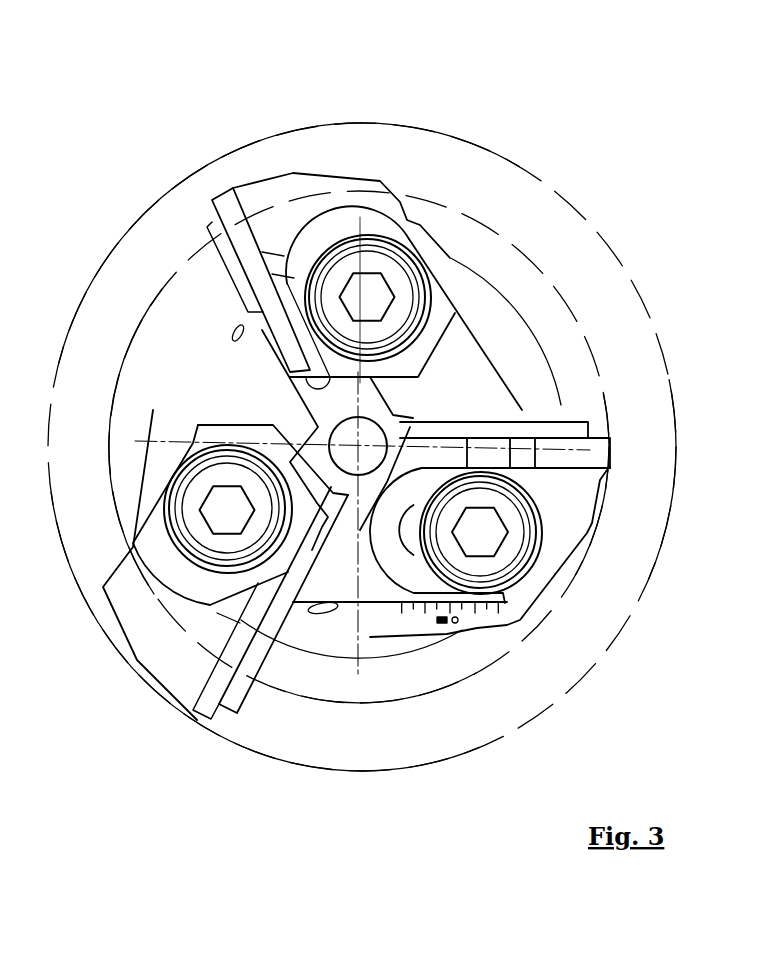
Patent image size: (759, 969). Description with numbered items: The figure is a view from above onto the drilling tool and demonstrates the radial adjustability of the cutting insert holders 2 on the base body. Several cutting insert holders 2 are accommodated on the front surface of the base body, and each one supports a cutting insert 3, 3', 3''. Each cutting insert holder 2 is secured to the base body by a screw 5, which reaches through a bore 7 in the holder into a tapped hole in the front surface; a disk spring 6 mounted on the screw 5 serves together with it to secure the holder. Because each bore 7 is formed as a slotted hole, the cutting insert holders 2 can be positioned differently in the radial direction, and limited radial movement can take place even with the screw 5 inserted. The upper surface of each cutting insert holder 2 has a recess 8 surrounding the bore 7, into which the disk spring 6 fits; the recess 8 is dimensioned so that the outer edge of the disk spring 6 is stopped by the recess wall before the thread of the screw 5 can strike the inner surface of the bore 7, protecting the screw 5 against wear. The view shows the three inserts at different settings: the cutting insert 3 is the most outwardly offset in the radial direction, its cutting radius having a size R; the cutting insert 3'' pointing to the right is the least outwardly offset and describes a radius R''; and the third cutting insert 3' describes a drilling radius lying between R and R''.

The cutting insert holder 2 is at (275, 185).
The cutting insert 3 is at (270, 656).
The cutting insert 3' is at (239, 249).
The cutting insert 3'' is at (570, 435).
The screw 5 is at (390, 262).
The disk spring 6 is at (375, 243).
The bore 7 is at (418, 543).
The recess 8 is at (396, 557).
The cutting radius R is at (357, 804).
The radius R'' is at (478, 745).